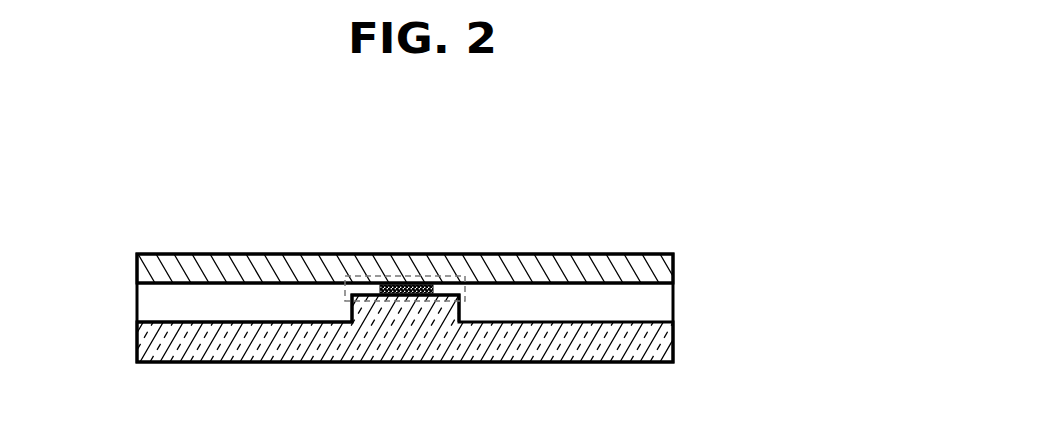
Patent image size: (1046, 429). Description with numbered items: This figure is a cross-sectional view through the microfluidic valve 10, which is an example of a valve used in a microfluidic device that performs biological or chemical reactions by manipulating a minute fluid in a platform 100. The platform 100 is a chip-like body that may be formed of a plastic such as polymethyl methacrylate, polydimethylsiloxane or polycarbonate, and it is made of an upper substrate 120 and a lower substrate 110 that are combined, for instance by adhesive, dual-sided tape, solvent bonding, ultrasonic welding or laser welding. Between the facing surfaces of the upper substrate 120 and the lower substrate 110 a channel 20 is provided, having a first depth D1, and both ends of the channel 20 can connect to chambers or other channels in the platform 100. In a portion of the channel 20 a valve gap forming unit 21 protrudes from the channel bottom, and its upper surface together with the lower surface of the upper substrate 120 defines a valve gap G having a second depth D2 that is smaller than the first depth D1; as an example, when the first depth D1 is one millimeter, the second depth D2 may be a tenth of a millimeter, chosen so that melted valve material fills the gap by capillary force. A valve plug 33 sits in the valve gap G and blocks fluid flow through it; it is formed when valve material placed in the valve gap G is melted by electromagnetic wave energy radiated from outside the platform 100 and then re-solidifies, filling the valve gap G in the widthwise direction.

The microfluidic valve 10 is at (678, 195).
The platform 100 is at (125, 255).
The lower substrate 110 is at (673, 340).
The upper substrate 120 is at (673, 268).
The channel 20 is at (660, 302).
The valve gap forming unit 21 is at (410, 300).
The valve plug 33 is at (412, 284).
The valve gap G is at (370, 276).
The first depth D1 is at (571, 343).
The second depth D2 is at (517, 295).